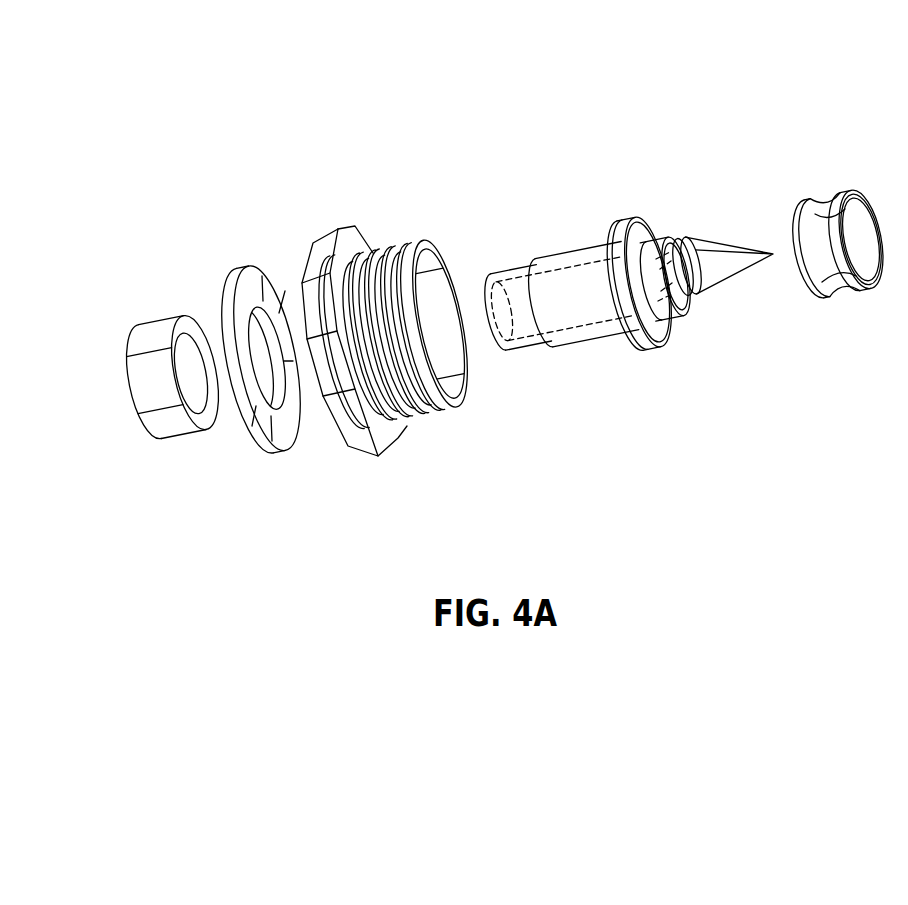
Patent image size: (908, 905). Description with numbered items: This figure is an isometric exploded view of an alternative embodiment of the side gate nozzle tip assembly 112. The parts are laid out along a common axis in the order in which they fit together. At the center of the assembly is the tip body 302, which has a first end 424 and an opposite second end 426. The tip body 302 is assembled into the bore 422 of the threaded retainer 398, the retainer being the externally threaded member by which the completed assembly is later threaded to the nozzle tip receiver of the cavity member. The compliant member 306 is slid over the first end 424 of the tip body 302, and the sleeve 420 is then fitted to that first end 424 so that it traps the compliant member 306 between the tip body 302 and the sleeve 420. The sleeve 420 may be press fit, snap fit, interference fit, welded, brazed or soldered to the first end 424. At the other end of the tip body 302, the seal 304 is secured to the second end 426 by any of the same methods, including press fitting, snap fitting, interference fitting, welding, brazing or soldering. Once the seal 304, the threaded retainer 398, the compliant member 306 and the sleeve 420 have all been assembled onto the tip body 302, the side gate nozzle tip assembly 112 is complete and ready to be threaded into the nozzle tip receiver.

The side gate nozzle tip assembly 112 is at (322, 166).
The sleeve 420 is at (158, 319).
The compliant member 306 is at (255, 425).
The threaded retainer 398 is at (370, 453).
The bore 422 is at (438, 238).
The first end 424 is at (512, 262).
The tip body 302 is at (582, 341).
The second end 426 is at (721, 287).
The seal 304 is at (852, 293).